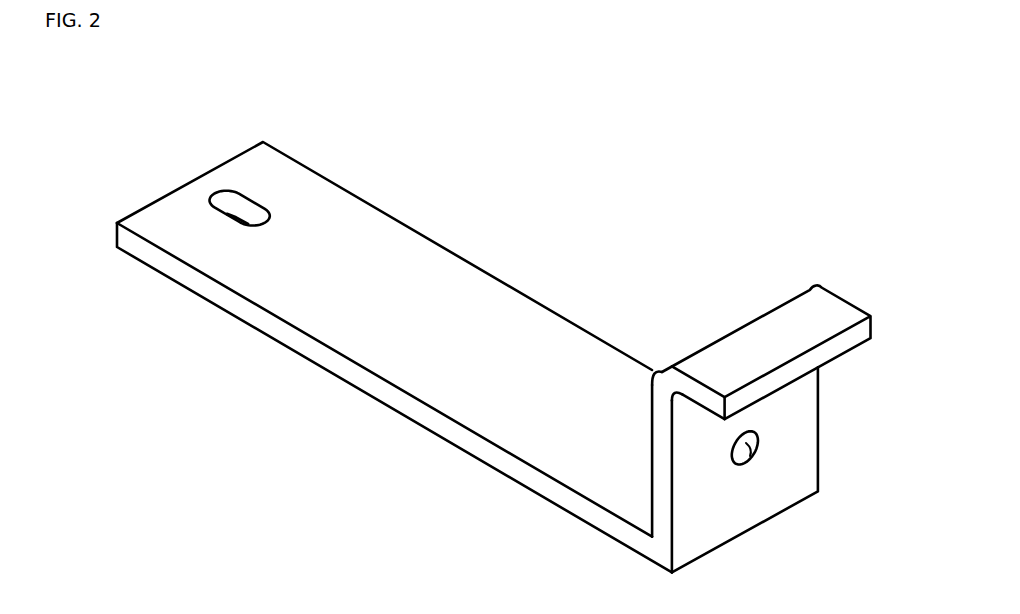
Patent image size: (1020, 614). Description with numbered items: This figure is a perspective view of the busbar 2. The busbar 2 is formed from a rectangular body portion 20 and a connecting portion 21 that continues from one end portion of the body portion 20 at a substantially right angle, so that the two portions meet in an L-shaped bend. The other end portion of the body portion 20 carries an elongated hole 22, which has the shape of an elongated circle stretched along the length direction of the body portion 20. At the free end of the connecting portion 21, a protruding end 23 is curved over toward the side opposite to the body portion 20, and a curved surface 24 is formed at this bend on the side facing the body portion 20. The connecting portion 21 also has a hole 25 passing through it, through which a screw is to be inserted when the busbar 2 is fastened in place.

The busbar 2 is at (584, 64).
The body portion 20 is at (428, 268).
The connecting portion 21 is at (718, 506).
The elongated hole 22 is at (243, 200).
The protruding end 23 is at (833, 305).
The curved surface 24 is at (735, 330).
The hole 25 is at (758, 448).